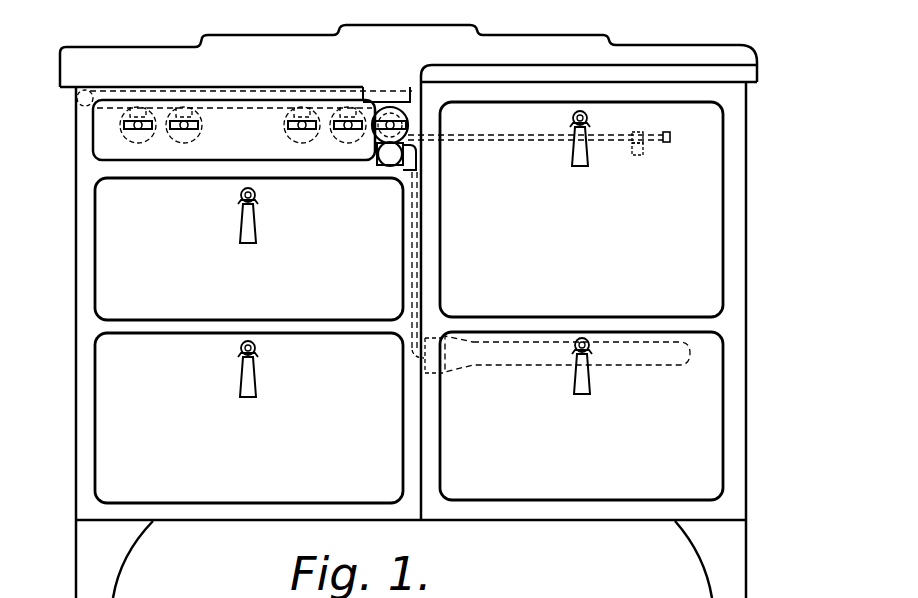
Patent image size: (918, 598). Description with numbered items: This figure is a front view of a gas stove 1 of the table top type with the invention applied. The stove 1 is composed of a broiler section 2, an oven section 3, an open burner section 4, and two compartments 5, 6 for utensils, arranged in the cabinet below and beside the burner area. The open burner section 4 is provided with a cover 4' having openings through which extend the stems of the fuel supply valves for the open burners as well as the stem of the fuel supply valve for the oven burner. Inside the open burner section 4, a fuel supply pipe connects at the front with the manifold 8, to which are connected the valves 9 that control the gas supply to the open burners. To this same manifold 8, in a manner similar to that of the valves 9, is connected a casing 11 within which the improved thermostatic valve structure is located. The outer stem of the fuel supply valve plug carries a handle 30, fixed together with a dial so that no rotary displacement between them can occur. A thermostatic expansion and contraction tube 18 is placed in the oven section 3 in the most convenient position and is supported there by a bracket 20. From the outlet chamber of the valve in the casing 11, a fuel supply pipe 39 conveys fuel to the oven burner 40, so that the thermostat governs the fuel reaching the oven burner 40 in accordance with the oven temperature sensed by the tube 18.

The gas stove 1 is at (75, 364).
The broiler section 2 is at (697, 417).
The oven section 3 is at (680, 223).
The open burner section 4 is at (207, 130).
The cover 4' is at (234, 156).
The compartment for utensils 5 is at (108, 251).
The compartment for utensils 6 is at (115, 427).
The manifold 8 is at (243, 96).
The valves 9 is at (348, 124).
The casing 11 is at (386, 166).
The thermostatic expansion and contraction tube 18 is at (544, 141).
The bracket 20 is at (648, 151).
The handle 30 is at (393, 122).
The fuel supply pipe 39 is at (413, 162).
The oven burner 40 is at (555, 361).